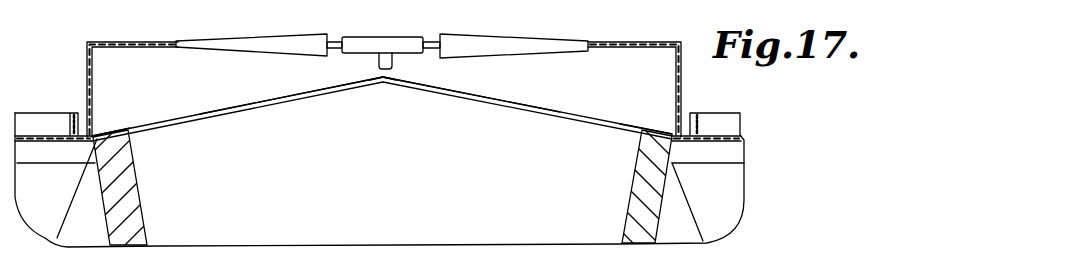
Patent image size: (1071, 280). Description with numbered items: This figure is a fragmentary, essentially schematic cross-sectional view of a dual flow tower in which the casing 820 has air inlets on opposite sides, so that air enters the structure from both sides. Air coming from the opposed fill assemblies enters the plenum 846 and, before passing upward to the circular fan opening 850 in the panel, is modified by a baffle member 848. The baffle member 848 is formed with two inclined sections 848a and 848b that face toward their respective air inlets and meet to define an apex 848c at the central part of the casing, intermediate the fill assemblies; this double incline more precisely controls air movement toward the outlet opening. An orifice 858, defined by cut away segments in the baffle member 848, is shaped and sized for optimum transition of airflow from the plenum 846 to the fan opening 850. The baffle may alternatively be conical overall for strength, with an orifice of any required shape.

The casing 820 is at (688, 90).
The plenum 846 is at (392, 180).
The baffle member 848 is at (147, 143).
The inclined section 848a is at (124, 130).
The inclined section 848b is at (637, 104).
The apex 848c is at (383, 83).
The fan opening 850 is at (592, 42).
The orifice 858 is at (235, 112).